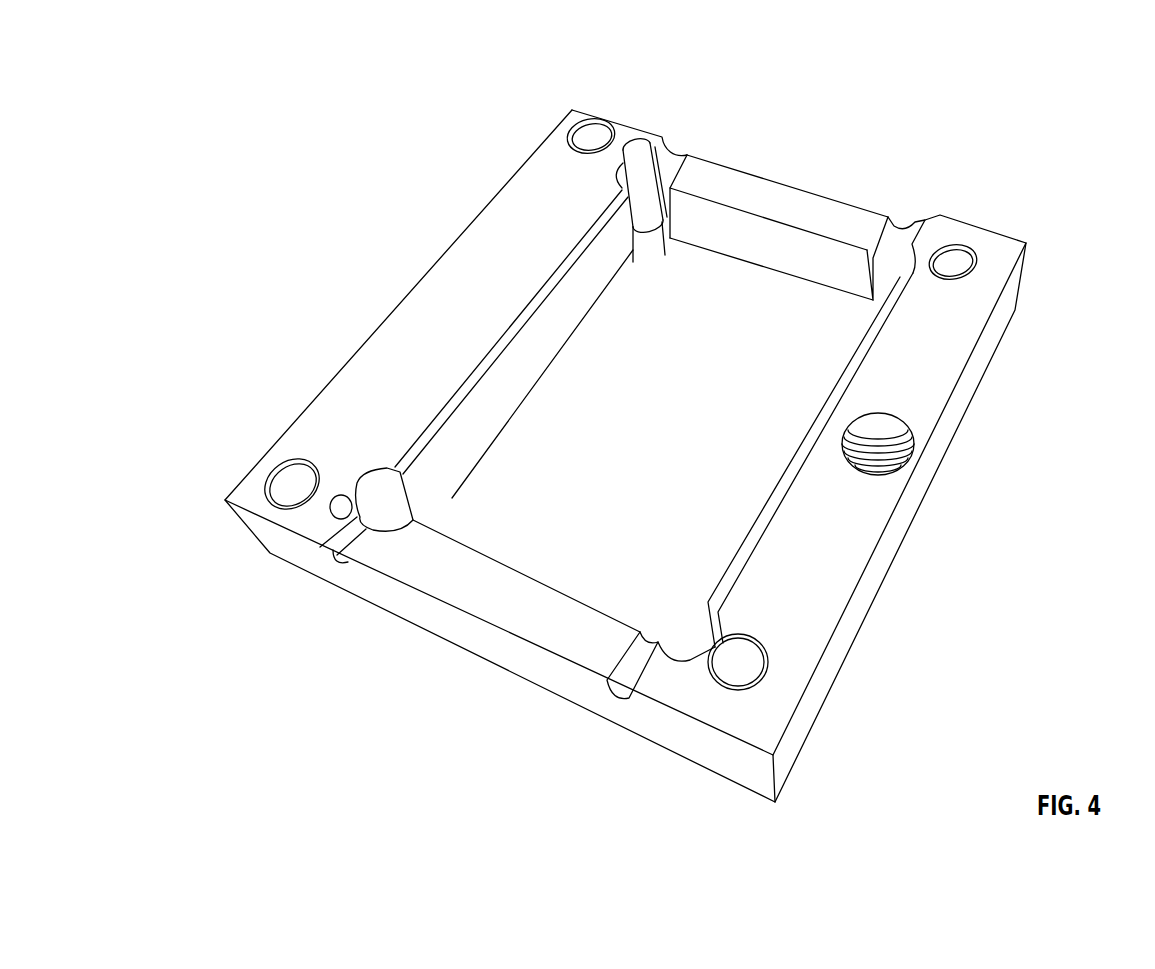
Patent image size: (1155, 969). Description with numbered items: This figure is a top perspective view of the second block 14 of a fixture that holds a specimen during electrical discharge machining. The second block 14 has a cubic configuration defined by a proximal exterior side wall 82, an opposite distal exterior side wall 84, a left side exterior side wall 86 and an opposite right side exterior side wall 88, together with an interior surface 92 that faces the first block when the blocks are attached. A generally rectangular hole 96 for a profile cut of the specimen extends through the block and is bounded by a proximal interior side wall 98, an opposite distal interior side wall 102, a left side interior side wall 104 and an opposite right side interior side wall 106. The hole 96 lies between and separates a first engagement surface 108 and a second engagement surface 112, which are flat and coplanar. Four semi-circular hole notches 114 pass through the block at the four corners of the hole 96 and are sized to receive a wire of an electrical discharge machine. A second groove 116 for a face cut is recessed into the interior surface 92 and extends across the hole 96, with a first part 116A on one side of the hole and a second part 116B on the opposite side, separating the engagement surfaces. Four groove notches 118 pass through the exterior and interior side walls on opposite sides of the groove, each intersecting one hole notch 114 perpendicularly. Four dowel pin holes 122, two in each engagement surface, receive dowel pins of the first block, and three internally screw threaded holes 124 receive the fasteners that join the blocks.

The second block 14 is at (625, 456).
The proximal exterior side wall 82 is at (916, 592).
The distal exterior side wall 84 is at (349, 299).
The left side exterior side wall 86 is at (663, 776).
The right side exterior side wall 88 is at (882, 188).
The interior surface 92 is at (501, 156).
The hole 96 is at (783, 201).
The proximal interior side wall 98 is at (816, 433).
The distal interior side wall 102 is at (542, 374).
The left side interior side wall 104 is at (512, 583).
The right side interior side wall 106 is at (779, 233).
The first engagement surface 108 is at (816, 433).
The second engagement surface 112 is at (496, 332).
The hole notches 114 is at (634, 389).
The second groove 116 is at (656, 410).
The first part of the second groove 116A is at (383, 631).
The second part of the second groove 116B is at (834, 142).
The groove notches 118 is at (619, 420).
The dowel pin holes 122 is at (617, 371).
The internally screw threaded holes 124 is at (616, 274).